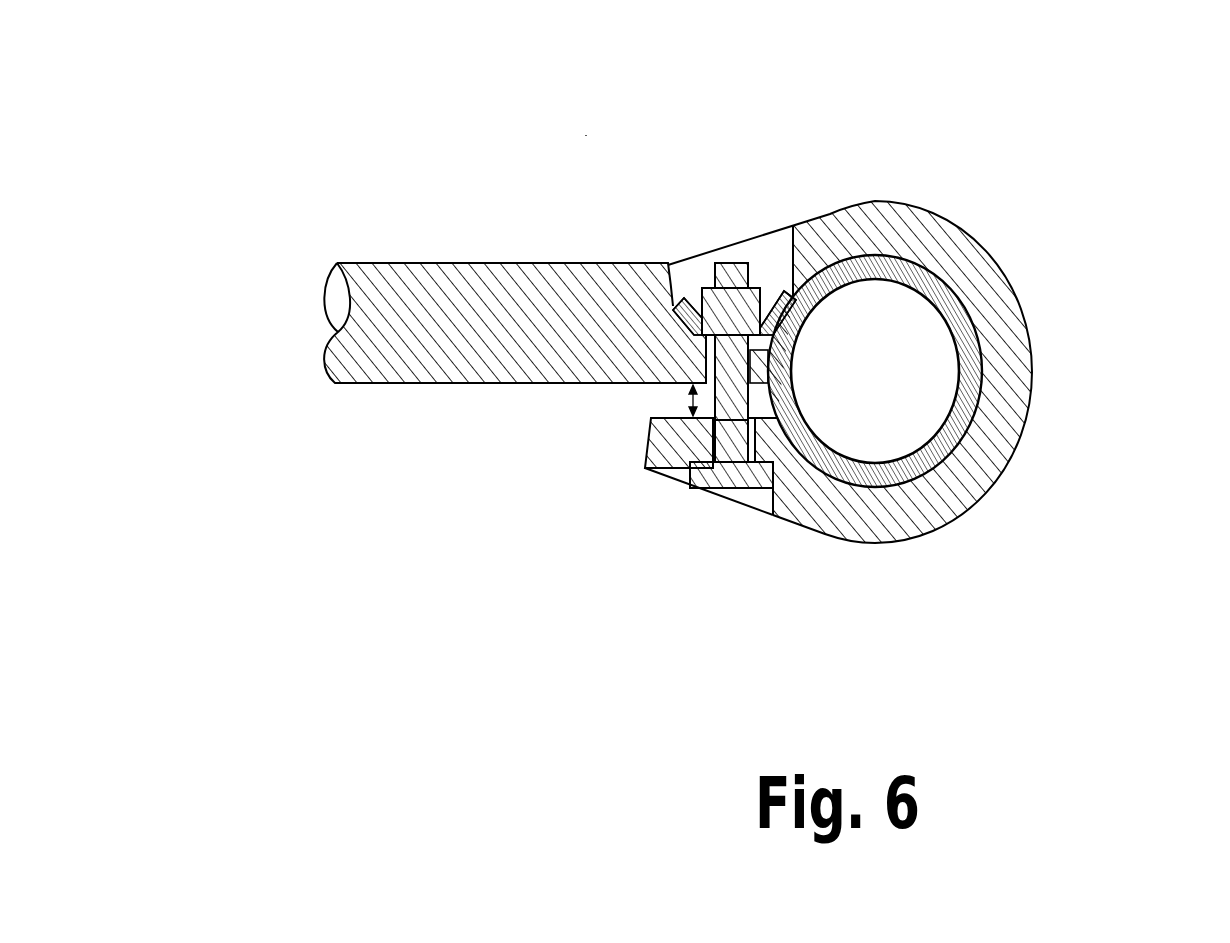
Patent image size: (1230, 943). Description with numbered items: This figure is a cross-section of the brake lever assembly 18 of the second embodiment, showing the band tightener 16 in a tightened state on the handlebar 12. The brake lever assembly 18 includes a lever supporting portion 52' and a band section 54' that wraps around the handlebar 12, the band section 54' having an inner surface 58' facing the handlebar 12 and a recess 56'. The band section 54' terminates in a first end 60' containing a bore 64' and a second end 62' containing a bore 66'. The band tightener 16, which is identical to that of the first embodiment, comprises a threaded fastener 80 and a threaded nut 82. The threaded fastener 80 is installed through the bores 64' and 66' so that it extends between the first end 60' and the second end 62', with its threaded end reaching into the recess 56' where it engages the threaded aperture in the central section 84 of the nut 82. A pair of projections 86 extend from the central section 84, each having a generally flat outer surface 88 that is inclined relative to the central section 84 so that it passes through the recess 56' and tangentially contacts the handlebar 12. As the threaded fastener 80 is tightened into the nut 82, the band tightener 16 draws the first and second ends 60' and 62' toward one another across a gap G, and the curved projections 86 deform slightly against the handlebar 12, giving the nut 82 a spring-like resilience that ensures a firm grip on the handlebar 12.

The brake lever assembly 18 is at (586, 110).
The lever supporting portion 52' is at (515, 269).
The first end 60' is at (523, 400).
The band section 54' is at (870, 372).
The handlebar 12 is at (828, 298).
The inner surface 58' is at (875, 371).
The recess 56' is at (779, 313).
The second end 62' is at (635, 438).
The gap G is at (690, 408).
The band tightener 16 is at (601, 399).
The threaded nut 82 is at (700, 338).
The threaded fastener 80 is at (702, 486).
The bore 64' is at (736, 242).
The bore 66' is at (738, 487).
The central section 84 is at (710, 287).
The outer surface 88 is at (678, 306).
The projections 86 is at (675, 305).